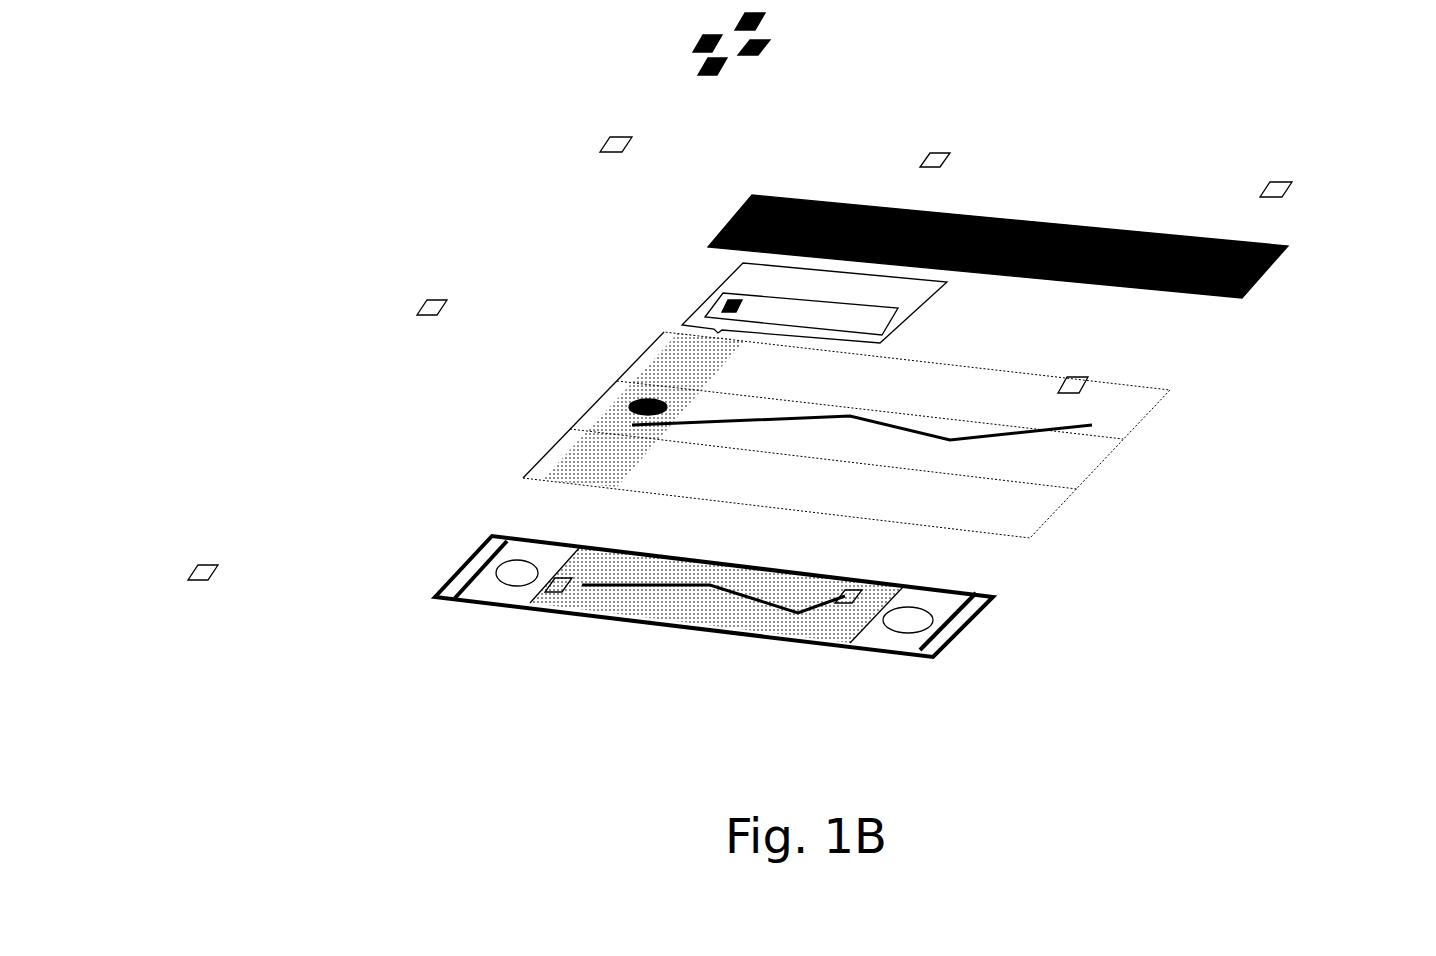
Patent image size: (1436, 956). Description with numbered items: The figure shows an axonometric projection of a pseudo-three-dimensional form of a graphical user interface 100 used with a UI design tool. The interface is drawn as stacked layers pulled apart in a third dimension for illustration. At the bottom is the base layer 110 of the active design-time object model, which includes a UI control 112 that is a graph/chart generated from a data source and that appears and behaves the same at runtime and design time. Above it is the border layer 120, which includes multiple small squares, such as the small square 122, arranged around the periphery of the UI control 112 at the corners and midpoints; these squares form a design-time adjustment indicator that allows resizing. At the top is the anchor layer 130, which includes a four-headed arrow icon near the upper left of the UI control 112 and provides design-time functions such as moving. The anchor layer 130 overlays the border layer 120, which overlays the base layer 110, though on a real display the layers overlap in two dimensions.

The graphical user interface 100 is at (336, 131).
The base layer 110 is at (522, 443).
The UI control 112 is at (808, 382).
The border layer 120 is at (873, 582).
The small square 122 is at (190, 573).
The anchor layer 130 is at (674, 39).